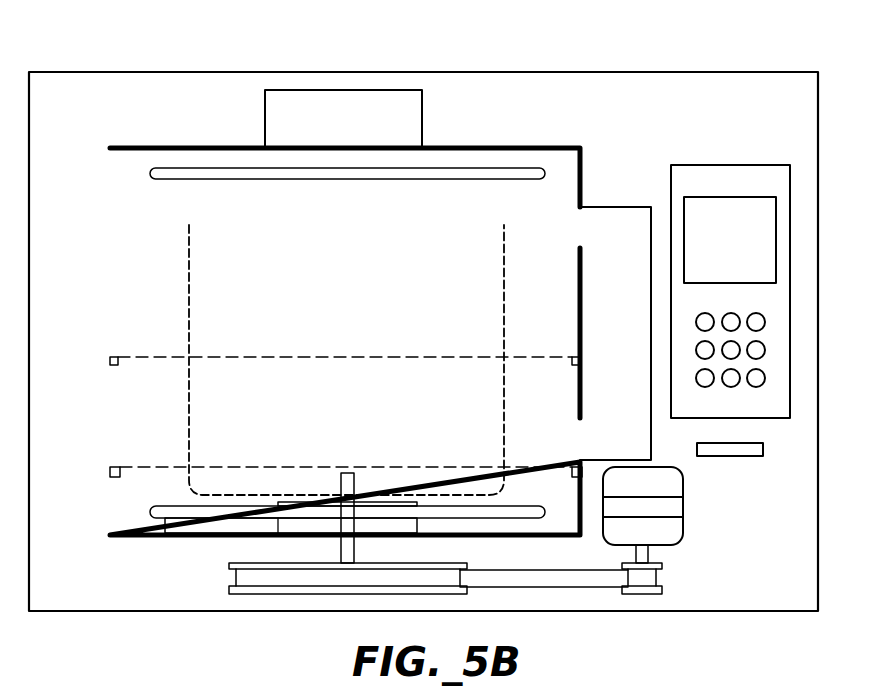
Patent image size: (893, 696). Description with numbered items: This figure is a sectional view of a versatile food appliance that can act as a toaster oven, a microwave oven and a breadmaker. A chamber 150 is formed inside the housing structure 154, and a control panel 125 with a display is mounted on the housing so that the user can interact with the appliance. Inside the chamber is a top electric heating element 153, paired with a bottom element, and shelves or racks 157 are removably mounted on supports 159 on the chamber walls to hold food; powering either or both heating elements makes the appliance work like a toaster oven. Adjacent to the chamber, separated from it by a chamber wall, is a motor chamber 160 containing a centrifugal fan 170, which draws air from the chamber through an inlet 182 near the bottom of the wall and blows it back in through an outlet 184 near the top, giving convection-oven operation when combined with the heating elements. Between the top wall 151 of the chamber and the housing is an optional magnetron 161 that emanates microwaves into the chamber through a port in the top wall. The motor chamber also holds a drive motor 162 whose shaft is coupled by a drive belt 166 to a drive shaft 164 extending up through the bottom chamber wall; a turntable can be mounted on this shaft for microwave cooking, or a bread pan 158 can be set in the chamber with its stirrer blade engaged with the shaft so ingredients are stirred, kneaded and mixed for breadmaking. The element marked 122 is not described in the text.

The housing structure 154 is at (618, 72).
The top wall 151 is at (128, 146).
The chamber 150 is at (139, 238).
The magnetron 161 is at (424, 102).
The centrifugal fan 170 is at (612, 206).
The control panel 125 is at (690, 165).
The bread pan 158 is at (502, 250).
The outlet 184 is at (615, 247).
The inlet 182 is at (620, 405).
The supports 159 is at (120, 362).
The shelves or racks 157 is at (262, 357).
The top electric heating element 153 is at (165, 518).
The drive shaft 164 is at (355, 553).
The drive belt 166 is at (510, 578).
The motor chamber 160 is at (683, 533).
The sensor 122 is at (750, 456).
The drive motor 162 is at (722, 585).